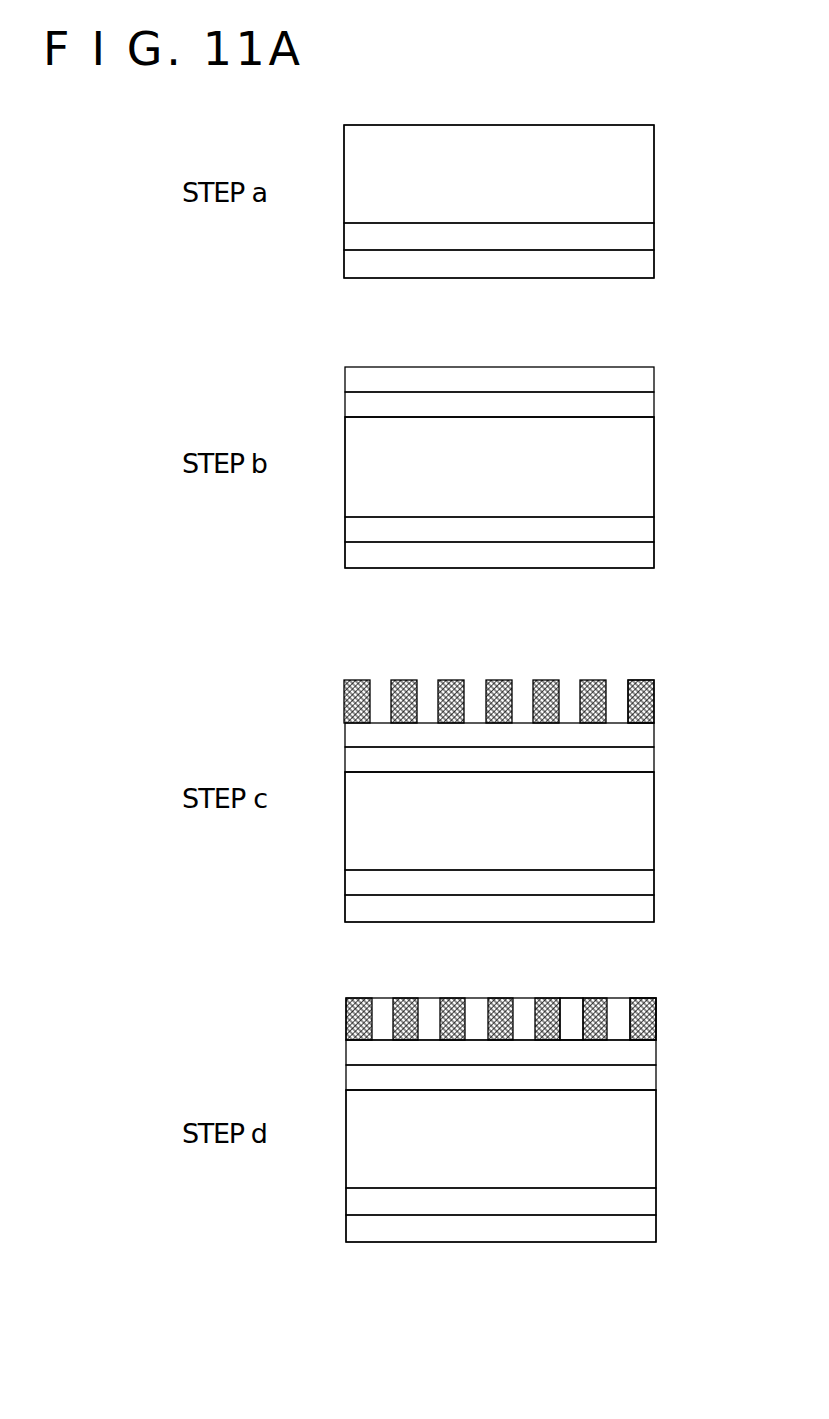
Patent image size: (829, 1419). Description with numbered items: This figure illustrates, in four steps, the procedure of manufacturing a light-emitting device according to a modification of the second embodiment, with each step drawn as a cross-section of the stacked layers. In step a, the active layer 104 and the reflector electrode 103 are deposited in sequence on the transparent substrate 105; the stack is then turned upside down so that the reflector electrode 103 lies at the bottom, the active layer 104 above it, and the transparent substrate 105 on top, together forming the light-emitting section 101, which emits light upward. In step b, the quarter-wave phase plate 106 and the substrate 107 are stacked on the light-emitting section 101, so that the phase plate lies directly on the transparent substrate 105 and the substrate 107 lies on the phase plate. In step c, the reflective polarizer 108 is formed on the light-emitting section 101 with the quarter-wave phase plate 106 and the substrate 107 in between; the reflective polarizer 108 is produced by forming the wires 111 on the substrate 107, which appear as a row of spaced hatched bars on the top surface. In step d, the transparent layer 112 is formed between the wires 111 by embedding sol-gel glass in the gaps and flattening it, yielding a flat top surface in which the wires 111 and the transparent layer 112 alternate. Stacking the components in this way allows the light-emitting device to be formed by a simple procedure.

The light-emitting section 101 is at (726, 165).
The reflector electrode 103 is at (648, 261).
The active layer 104 is at (648, 235).
The transparent substrate 105 is at (648, 165).
The λ/4-phase plate 106 is at (648, 403).
The substrate 107 is at (648, 375).
The reflective polarizer 108 is at (662, 692).
The wires 111 is at (650, 680).
The transparent layer 112 is at (571, 1010).